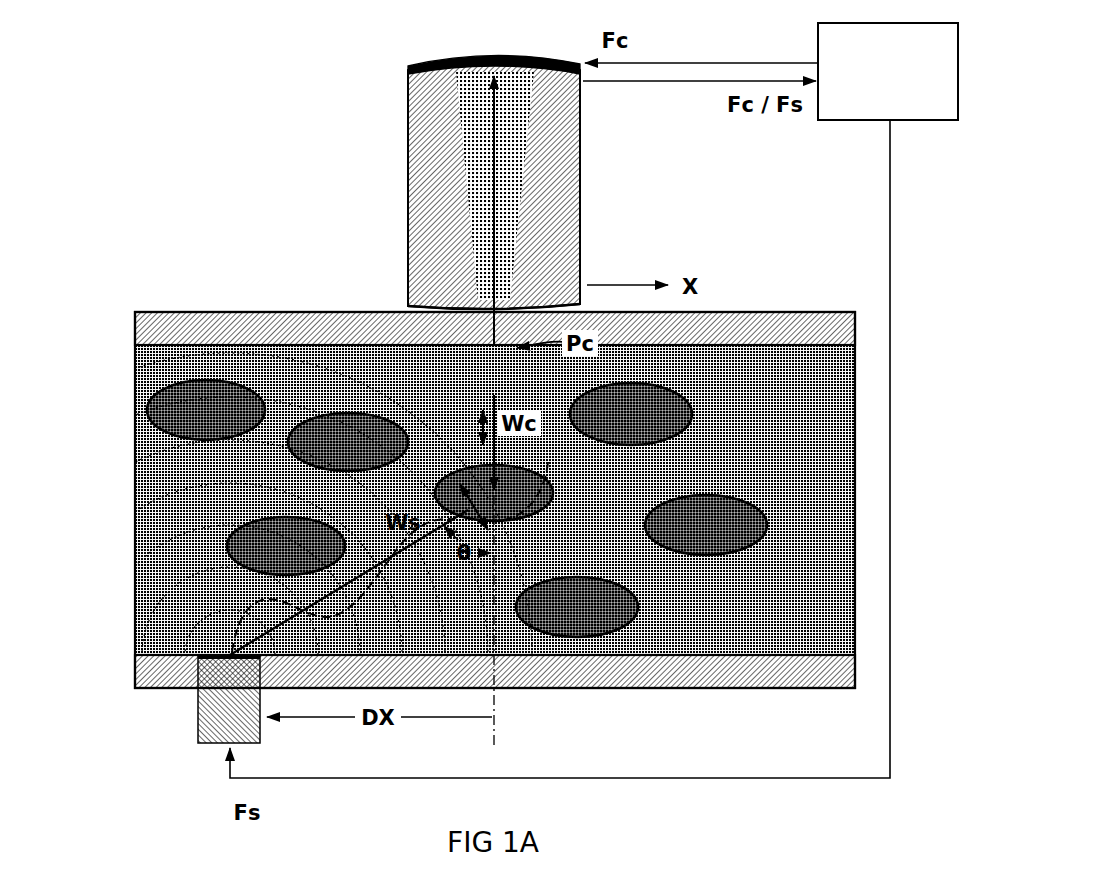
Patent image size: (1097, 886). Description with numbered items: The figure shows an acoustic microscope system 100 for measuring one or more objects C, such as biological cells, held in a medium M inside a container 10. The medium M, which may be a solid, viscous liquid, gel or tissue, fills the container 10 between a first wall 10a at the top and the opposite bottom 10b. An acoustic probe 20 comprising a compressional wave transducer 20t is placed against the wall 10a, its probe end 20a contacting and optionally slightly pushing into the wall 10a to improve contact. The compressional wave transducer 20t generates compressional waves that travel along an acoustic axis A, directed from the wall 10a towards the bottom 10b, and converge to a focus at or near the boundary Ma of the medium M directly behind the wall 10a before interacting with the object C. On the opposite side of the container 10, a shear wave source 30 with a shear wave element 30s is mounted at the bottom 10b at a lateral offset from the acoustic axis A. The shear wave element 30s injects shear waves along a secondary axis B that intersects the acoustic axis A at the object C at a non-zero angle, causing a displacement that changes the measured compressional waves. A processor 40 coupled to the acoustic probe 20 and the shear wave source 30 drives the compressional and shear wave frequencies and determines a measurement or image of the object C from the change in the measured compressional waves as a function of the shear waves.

The acoustic microscope system 100 is at (125, 88).
The container 10 is at (427, 548).
The wall of the container 10a is at (418, 340).
The bottom of the container 10b is at (418, 682).
The acoustic probe 20 is at (435, 177).
The compressional wave transducer 20t is at (418, 69).
The probe end 20a is at (416, 296).
The shear wave source 30 is at (182, 741).
The shear wave element 30s is at (210, 698).
The processor 40 is at (875, 84).
The medium M is at (795, 401).
The boundary of the medium Ma is at (420, 372).
The acoustic axis A is at (486, 388).
The secondary axis B is at (361, 587).
The object C is at (515, 500).